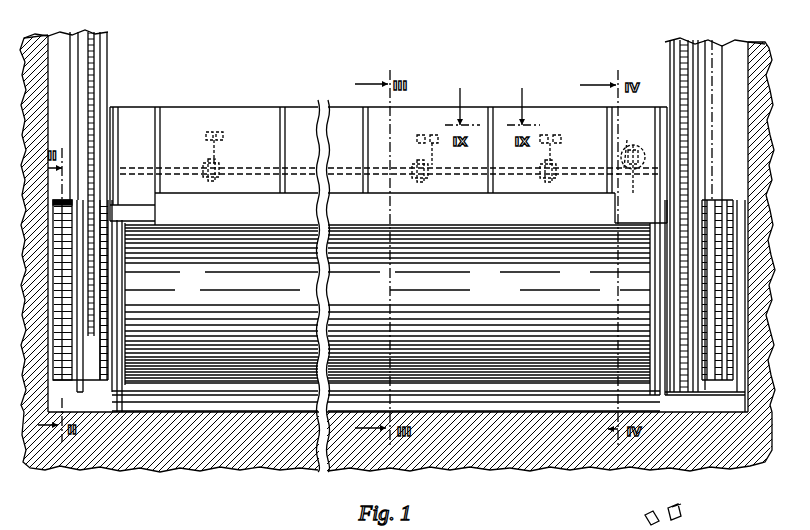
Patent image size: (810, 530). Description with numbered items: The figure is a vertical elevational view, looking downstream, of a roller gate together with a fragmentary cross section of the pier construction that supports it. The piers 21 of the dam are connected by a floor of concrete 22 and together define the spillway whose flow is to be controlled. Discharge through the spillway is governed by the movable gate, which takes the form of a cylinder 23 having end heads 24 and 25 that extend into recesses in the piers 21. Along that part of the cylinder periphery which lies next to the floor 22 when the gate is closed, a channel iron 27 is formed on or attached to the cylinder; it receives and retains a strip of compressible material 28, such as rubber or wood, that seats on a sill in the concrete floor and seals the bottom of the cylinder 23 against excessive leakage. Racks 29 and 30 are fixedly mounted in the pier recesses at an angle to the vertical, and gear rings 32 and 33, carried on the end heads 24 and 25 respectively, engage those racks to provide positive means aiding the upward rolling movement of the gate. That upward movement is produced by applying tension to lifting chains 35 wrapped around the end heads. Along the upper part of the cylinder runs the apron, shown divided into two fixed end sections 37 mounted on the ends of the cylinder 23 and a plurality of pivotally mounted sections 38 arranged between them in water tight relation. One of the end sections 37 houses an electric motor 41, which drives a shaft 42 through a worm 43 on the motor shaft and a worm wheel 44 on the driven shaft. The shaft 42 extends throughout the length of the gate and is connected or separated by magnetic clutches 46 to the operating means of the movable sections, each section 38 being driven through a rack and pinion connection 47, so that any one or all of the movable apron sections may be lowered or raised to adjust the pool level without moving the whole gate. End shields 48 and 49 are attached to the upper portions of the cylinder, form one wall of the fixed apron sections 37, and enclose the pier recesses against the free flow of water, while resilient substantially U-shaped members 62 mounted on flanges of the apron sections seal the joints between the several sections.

The pier 21 is at (45, 50).
The floor of concrete 22 is at (222, 470).
The cylinder 23 is at (387, 304).
The end head 24 is at (72, 388).
The end head 25 is at (678, 392).
The channel iron 27 is at (440, 392).
The strip of compressible material 28 is at (252, 404).
The rack 29 is at (92, 33).
The rack 30 is at (684, 40).
The gear ring 32 is at (85, 190).
The gear ring 33 is at (680, 280).
The lifting chain 35 is at (723, 45).
The fixed end apron section 37 is at (157, 107).
The movable apron section 38 is at (266, 108).
The electric motor 41 is at (627, 145).
The shaft 42 is at (577, 172).
The worm 43 is at (640, 152).
The worm wheel 44 is at (633, 193).
The magnetic clutch 46 is at (202, 180).
The rack and pinion connection 47 is at (224, 159).
The end shield 48 is at (115, 107).
The end shield 49 is at (663, 105).
The resilient U-shaped member 62 is at (284, 108).